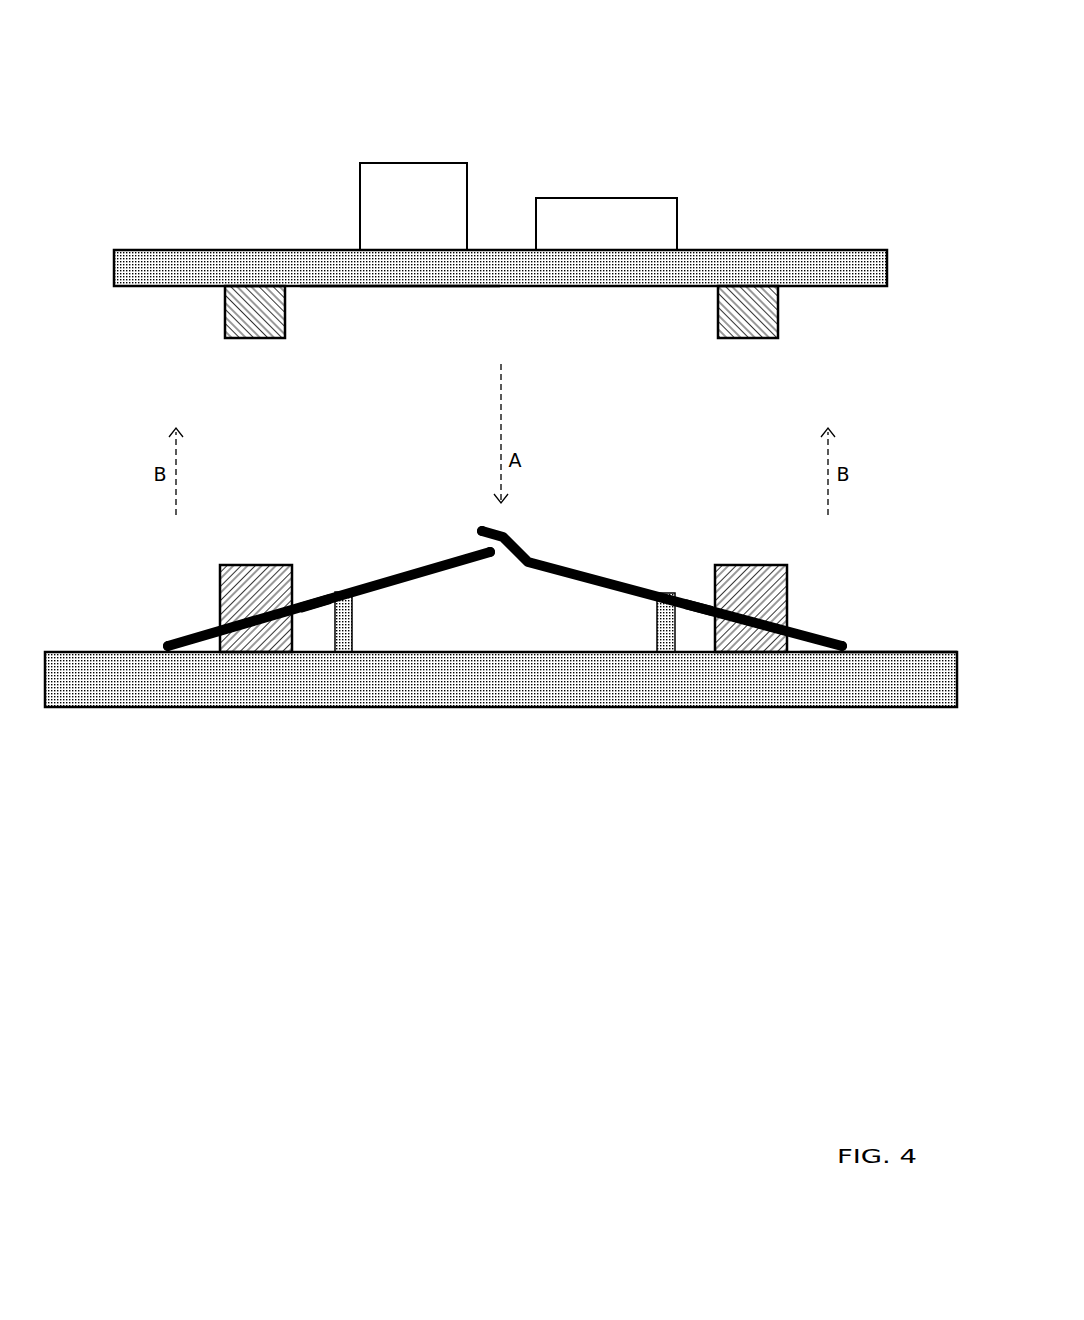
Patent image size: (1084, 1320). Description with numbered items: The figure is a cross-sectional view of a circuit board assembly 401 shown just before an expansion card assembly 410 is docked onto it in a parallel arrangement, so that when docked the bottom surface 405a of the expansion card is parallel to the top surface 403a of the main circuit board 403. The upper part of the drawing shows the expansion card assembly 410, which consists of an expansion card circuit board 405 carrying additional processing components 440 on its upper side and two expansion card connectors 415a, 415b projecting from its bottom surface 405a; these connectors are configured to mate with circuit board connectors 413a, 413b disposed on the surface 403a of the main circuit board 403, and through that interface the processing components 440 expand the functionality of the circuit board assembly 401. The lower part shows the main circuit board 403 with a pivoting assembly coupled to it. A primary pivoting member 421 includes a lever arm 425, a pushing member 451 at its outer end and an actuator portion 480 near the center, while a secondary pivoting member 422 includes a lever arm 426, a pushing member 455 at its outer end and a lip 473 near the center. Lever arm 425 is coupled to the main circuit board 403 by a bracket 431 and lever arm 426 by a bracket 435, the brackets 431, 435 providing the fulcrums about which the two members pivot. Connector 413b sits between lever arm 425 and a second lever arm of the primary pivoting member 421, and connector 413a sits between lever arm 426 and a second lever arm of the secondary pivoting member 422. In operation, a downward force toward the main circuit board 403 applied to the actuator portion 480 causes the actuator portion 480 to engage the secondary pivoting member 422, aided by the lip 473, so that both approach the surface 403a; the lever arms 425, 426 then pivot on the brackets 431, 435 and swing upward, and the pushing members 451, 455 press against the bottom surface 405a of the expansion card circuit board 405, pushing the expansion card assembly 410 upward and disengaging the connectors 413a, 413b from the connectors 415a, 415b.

The circuit board assembly 401 is at (236, 745).
The main circuit board 403 is at (887, 688).
The top surface of the circuit board assembly 403a is at (893, 652).
The expansion card circuit board 405 is at (233, 250).
The bottom surface of the expansion card assembly 405a is at (393, 287).
The expansion card assembly 410 is at (262, 119).
The circuit board connector 413a is at (220, 600).
The circuit board connector 413b is at (787, 580).
The expansion card connector 415a is at (225, 333).
The expansion card connector 415b is at (778, 317).
The primary pivoting member 421 is at (560, 570).
The secondary pivoting member 422 is at (455, 578).
The lever arm 425 is at (698, 612).
The lever arm 426 is at (317, 600).
The bracket 431 is at (657, 627).
The bracket 435 is at (352, 610).
The additional processing components 440 is at (583, 198).
The pushing member 451 is at (813, 627).
The pushing member 455 is at (200, 618).
The lip 473 is at (495, 557).
The actuator portion 480 is at (507, 531).